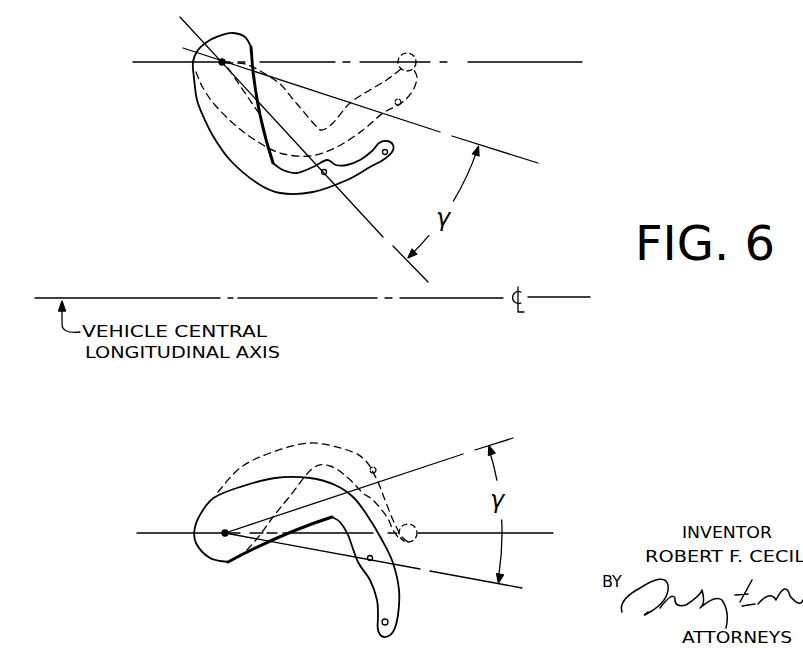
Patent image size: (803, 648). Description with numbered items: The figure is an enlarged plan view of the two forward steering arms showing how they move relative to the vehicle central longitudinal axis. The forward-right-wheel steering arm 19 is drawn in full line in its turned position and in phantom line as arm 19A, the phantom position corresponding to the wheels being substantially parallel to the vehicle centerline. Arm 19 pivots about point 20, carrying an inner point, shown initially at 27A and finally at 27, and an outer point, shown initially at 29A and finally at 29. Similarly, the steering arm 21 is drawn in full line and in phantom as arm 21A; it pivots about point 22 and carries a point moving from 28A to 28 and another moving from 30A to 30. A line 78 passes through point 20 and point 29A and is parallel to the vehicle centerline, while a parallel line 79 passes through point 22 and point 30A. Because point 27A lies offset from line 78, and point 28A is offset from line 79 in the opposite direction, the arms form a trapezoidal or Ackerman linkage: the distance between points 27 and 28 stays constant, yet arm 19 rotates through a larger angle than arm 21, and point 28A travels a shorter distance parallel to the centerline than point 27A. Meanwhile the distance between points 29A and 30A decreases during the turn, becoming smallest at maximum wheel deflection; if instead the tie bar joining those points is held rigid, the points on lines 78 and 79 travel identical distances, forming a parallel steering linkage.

The forward-right-wheel steering arm 19 is at (218, 132).
The pivot point of arm 19 20 is at (226, 60).
The phantom-line representation of steering arm 19 19A is at (296, 84).
The point on arm 19 27 is at (322, 176).
The initial position of point 27 27A is at (402, 100).
The point on arm 19 29 is at (393, 152).
The initial position of point 29 29A is at (425, 40).
The line through points 20 and 29A 78 is at (552, 62).
The steering arm 21 is at (223, 508).
The pivot point of arm 21 22 is at (222, 540).
The phantom-line representation of steering arm 21 21A is at (270, 453).
The point on arm 21 28 is at (370, 558).
The initial position of point 28 28A is at (373, 467).
The point on arm 21 30 is at (377, 623).
The initial position of point 30 30A is at (417, 523).
The line through points 22 and 30A 79 is at (446, 533).